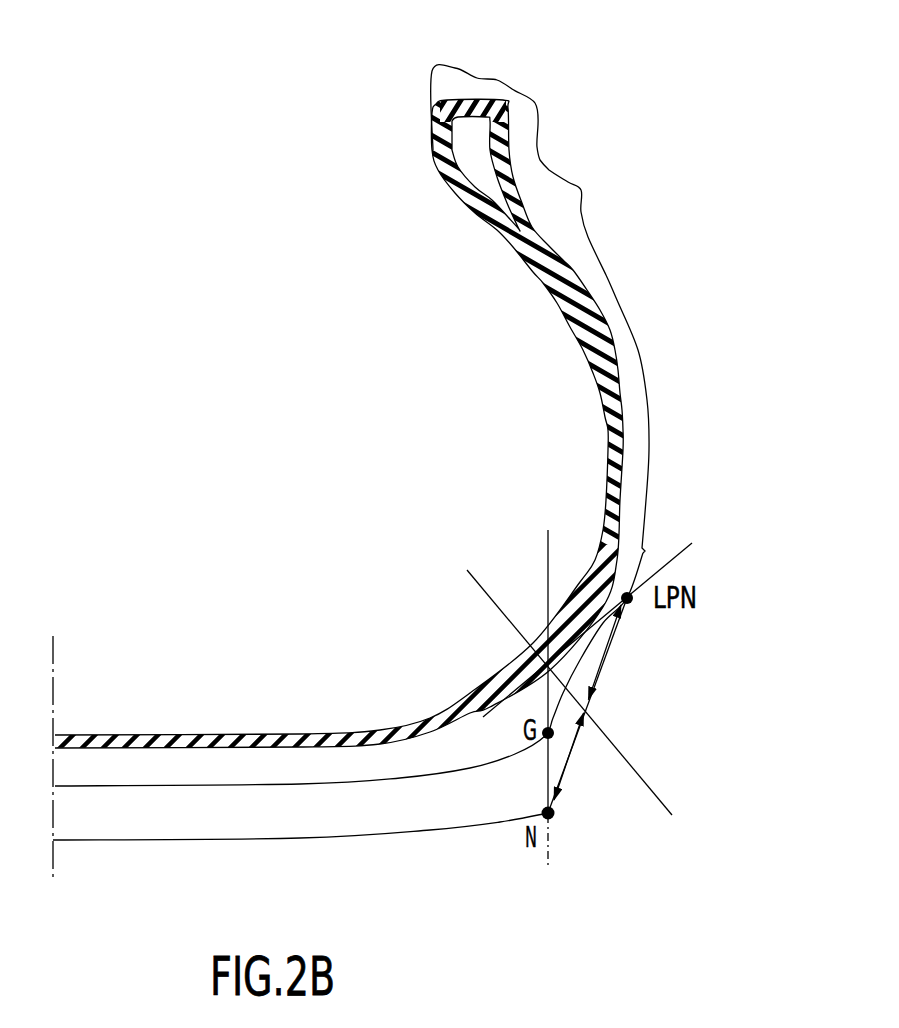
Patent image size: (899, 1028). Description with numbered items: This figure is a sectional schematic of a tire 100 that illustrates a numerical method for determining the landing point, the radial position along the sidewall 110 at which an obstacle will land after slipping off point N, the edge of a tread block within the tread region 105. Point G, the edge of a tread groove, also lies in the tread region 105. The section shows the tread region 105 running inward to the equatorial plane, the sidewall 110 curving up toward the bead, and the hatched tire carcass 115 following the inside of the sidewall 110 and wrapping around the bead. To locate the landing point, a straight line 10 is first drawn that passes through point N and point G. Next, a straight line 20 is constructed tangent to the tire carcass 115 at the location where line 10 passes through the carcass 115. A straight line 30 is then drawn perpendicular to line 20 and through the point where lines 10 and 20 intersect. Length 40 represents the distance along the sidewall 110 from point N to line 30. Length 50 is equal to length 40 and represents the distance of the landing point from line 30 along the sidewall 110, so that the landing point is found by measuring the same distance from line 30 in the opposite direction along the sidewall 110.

The tire 100 is at (449, 486).
The sidewall 110 is at (625, 357).
The tire carcass 115 is at (158, 738).
The tread region 105 is at (160, 856).
The straight line 10 is at (548, 540).
The straight line 20 is at (692, 545).
The straight line 30 is at (472, 582).
The length 40 is at (566, 760).
The length 50 is at (608, 662).